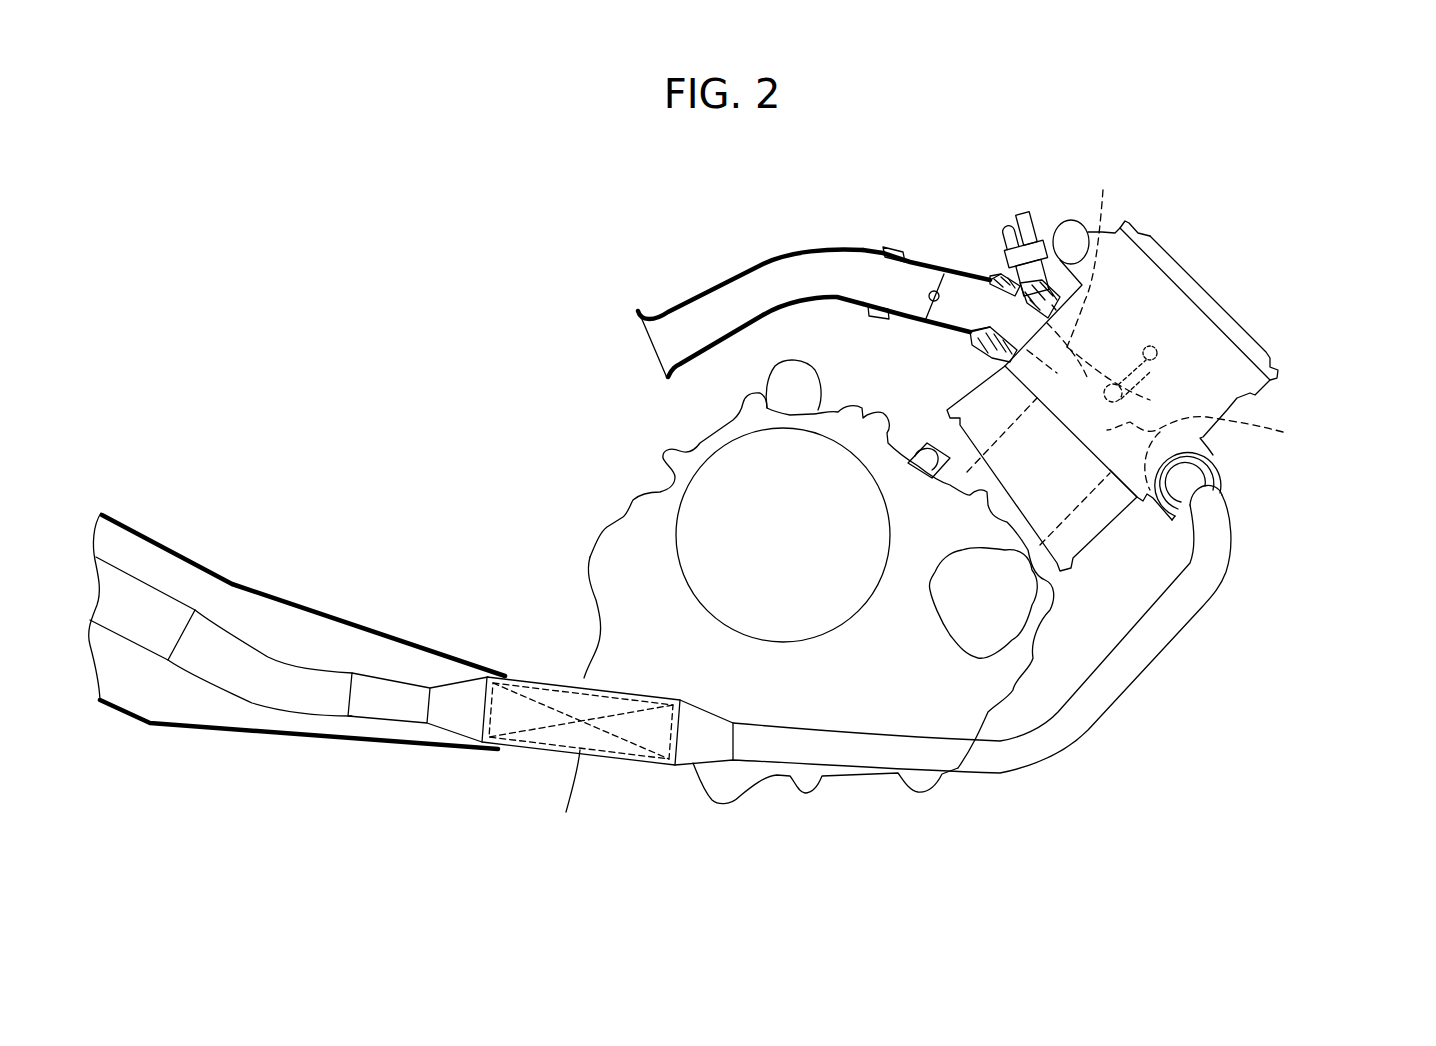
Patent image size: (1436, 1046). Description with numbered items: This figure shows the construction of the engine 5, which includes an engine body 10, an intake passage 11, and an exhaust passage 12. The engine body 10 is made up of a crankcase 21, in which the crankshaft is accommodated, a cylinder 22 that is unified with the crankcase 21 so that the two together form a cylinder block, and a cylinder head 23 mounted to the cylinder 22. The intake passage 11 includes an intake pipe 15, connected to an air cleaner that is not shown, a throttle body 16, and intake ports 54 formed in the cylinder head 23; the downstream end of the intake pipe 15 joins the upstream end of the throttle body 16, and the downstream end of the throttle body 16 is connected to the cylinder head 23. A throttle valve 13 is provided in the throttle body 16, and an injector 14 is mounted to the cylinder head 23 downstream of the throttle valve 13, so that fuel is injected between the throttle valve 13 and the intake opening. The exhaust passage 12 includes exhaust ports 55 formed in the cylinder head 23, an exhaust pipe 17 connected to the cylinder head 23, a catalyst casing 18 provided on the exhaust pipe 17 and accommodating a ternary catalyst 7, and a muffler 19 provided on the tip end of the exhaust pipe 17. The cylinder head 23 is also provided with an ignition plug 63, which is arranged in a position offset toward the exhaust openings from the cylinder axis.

The engine 5 is at (1185, 316).
The ternary catalyst 7 is at (532, 755).
The engine body 10 is at (1185, 316).
The intake passage 11 is at (819, 241).
The exhaust passage 12 is at (999, 678).
The throttle valve 13 is at (925, 264).
The injector 14 is at (1066, 221).
The intake pipe 15 is at (742, 274).
The throttle body 16 is at (970, 266).
The exhaust pipe 17 is at (1197, 611).
The catalyst casing 18 is at (581, 767).
The muffler 19 is at (200, 567).
The crankcase 21 is at (884, 665).
The cylinder 22 is at (1087, 542).
The cylinder head 23 is at (1150, 234).
The intake ports 54 is at (1088, 278).
The exhaust ports 55 is at (1216, 453).
The ignition plug 63 is at (1163, 363).